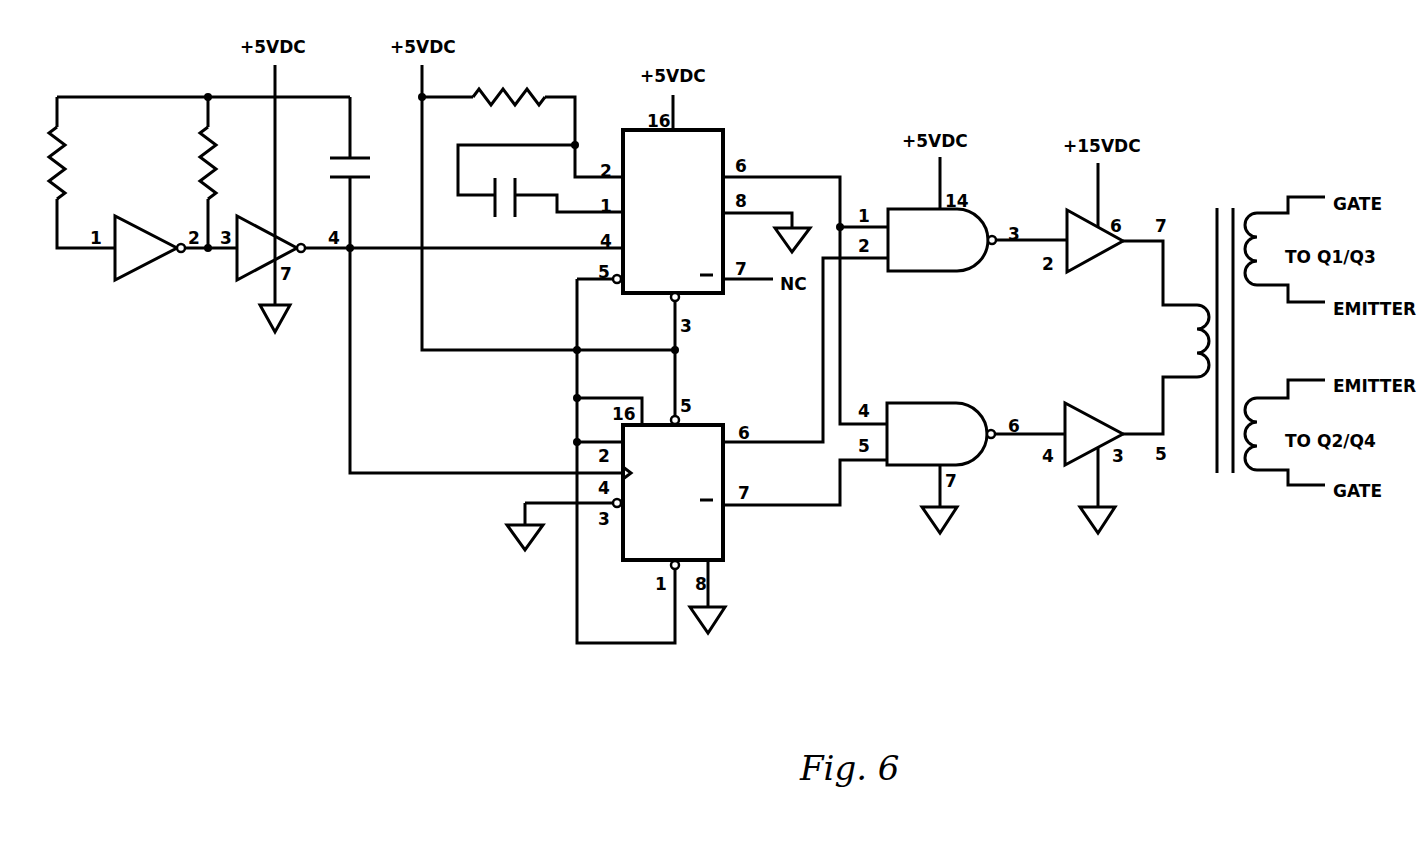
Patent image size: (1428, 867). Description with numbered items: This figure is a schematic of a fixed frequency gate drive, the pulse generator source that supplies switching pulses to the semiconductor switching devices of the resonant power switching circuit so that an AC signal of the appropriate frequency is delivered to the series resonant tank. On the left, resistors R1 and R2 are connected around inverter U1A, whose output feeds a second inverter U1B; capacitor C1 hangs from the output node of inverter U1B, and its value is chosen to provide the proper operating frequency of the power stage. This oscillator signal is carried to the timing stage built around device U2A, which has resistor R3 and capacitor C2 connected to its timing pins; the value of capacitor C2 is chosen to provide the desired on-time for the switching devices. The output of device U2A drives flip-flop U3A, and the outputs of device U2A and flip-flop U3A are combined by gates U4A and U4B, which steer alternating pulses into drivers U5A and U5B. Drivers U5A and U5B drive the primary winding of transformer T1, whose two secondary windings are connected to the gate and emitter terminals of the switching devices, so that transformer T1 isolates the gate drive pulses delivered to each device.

The resistor 100K R1 is at (85, 163).
The resistor 10K R2 is at (230, 163).
The resistor 10K R3 is at (509, 101).
The capacitor C1 is at (366, 169).
The capacitor C2 is at (522, 190).
The inverter 74HC04 U1A is at (159, 255).
The inverter 74HC04 U1B is at (279, 243).
The monostable multivibrator 74HC4538 U2A is at (696, 197).
The J-K flip-flop 74HC109 U3A is at (710, 489).
The NAND gate 74HC00 U4A is at (942, 256).
The NAND gate 74HC00 U4B is at (941, 434).
The driver UC3708 U5A is at (1110, 267).
The driver UC3708 U5B is at (1094, 425).
The gate drive transformer 1:1:1 T1 is at (1227, 346).